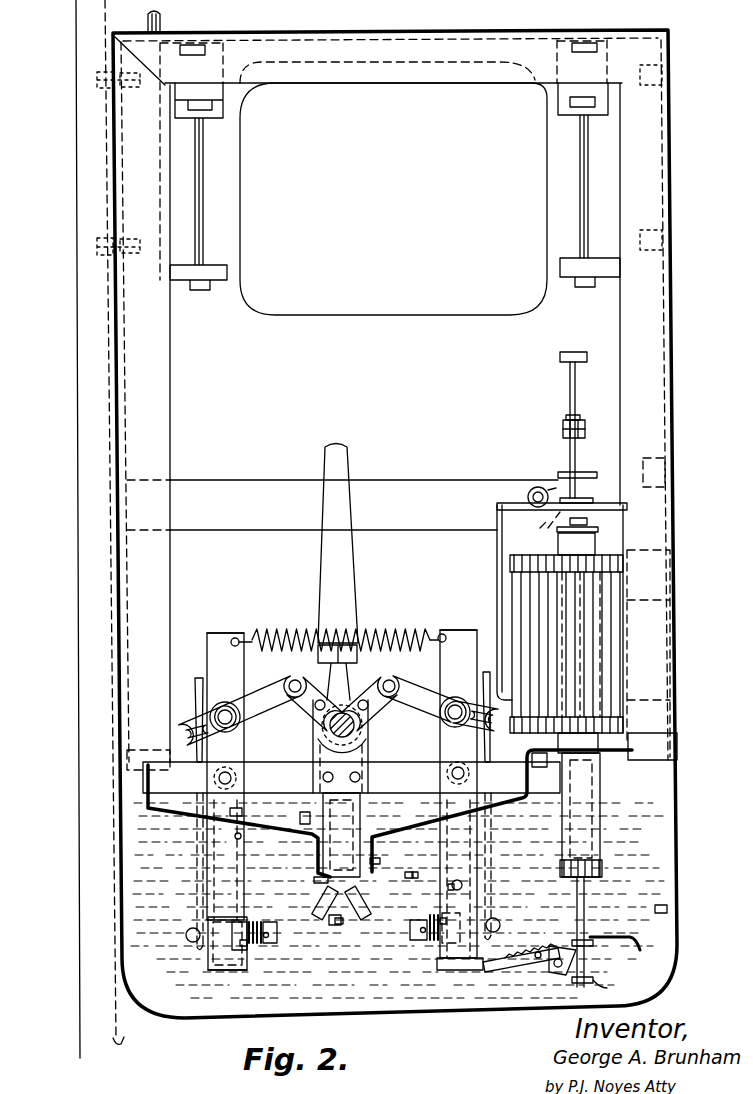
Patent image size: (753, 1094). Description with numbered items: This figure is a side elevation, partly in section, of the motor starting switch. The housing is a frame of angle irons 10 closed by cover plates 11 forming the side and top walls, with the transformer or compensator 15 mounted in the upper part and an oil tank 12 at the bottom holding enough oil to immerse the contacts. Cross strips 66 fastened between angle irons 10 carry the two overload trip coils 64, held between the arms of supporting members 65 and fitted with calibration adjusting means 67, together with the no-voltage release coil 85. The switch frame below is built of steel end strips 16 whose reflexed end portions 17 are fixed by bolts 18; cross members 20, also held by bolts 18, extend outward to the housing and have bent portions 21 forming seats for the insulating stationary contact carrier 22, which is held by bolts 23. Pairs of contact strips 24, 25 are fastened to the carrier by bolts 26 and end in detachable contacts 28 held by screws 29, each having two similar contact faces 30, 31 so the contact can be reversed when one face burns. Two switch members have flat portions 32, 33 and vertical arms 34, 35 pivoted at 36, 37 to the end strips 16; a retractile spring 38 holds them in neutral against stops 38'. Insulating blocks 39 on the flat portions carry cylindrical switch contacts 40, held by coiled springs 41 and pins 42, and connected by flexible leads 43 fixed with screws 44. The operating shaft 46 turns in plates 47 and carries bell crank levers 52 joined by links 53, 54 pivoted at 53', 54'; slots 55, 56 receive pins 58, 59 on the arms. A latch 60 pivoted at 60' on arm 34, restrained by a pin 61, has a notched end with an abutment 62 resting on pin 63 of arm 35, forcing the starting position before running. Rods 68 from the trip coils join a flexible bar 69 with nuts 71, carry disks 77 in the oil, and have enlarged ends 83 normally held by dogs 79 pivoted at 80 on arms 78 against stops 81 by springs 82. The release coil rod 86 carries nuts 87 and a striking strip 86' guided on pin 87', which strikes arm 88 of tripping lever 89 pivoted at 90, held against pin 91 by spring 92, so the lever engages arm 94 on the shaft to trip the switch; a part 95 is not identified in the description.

The angle irons 10 is at (165, 376).
The cover plates 11 is at (311, 33).
The oil tank 12 is at (680, 906).
The transformer or compensator 15 is at (303, 311).
The steel end strips 16 is at (400, 768).
The reflexed end portions 17 is at (505, 728).
The bolts 18 is at (540, 760).
The cross members 20 is at (417, 816).
The bent portions 21 is at (318, 883).
The stationary switch contact carrier 22 is at (357, 663).
The bolts 23 is at (376, 861).
The contact strips 24 is at (321, 913).
The contact strips 25 is at (410, 877).
The bolts 26 is at (360, 812).
The detachable contact 28 is at (351, 927).
The screws 29 is at (333, 922).
The contact face 30 is at (332, 921).
The contact face 31 is at (415, 880).
The flat contact-block carrying portion 32 is at (227, 973).
The flat contact-block carrying portion 33 is at (457, 971).
The vertical arm 34 is at (219, 645).
The vertical arm 35 is at (457, 636).
The pivot 36 is at (225, 770).
The pivot 37 is at (457, 766).
The retractile spring 38 is at (341, 624).
The stops 38' is at (268, 768).
The switch contact carrying blocks 39 is at (220, 917).
The switch contacts 40 is at (262, 941).
The coiled springs 41 is at (273, 941).
The pins 42 is at (240, 944).
The flexible conducting leads 43 is at (197, 880).
The screws 44 is at (187, 937).
The operating shaft 46 is at (325, 749).
The plates 47 is at (362, 753).
The bell crank levers 52 is at (312, 713).
The link 53 is at (260, 693).
The pivot 53' is at (300, 646).
The link 54 is at (422, 687).
The pivot 54' is at (416, 632).
The slot 55 is at (180, 722).
The slot 56 is at (492, 723).
The pin 58 is at (224, 710).
The pin 59 is at (455, 705).
The lever or latch 60 is at (239, 821).
The pivot 60' is at (250, 795).
The pin 61 is at (235, 837).
The abutment 62 is at (451, 888).
The pin 63 is at (463, 887).
The overload trip coils 64 is at (603, 626).
The supporting members 65 is at (667, 732).
The cross strips 66 is at (663, 591).
The calibration adjusting means 67 is at (587, 838).
The rod 68 is at (590, 523).
The flexible bar or strip 69 is at (600, 531).
The nuts 71 is at (582, 520).
The disks 77 is at (676, 951).
The arms 78 is at (522, 969).
The dogs or latches 79 is at (559, 968).
The pivot 80 is at (565, 975).
The stops 81 is at (557, 946).
The springs 82 is at (541, 950).
The enlarged ends 83 is at (607, 988).
The no-voltage release coil 85 is at (499, 549).
The rod 86 is at (559, 430).
The striking strip 86' is at (586, 408).
The nuts 87 is at (557, 420).
The pin 87' is at (608, 352).
The arm 88 is at (590, 474).
The tripping lever 89 is at (580, 520).
The pivot 90 is at (530, 488).
The pin 91 is at (556, 489).
The coiled spring 92 is at (558, 528).
The arm 94 is at (326, 563).
The wall 95 is at (88, 609).